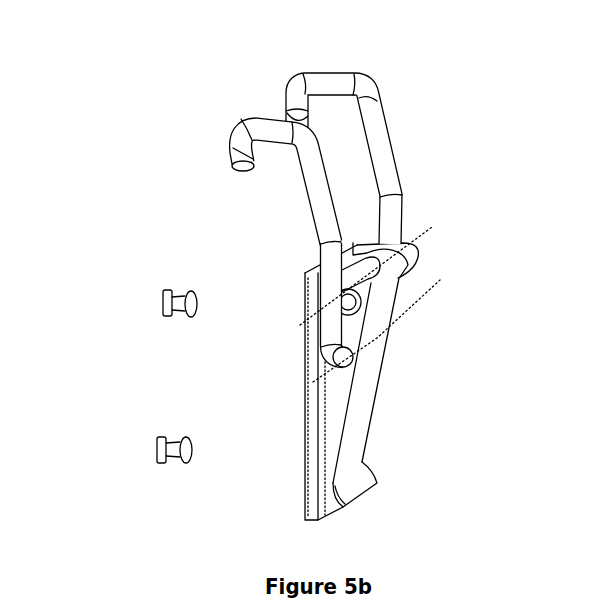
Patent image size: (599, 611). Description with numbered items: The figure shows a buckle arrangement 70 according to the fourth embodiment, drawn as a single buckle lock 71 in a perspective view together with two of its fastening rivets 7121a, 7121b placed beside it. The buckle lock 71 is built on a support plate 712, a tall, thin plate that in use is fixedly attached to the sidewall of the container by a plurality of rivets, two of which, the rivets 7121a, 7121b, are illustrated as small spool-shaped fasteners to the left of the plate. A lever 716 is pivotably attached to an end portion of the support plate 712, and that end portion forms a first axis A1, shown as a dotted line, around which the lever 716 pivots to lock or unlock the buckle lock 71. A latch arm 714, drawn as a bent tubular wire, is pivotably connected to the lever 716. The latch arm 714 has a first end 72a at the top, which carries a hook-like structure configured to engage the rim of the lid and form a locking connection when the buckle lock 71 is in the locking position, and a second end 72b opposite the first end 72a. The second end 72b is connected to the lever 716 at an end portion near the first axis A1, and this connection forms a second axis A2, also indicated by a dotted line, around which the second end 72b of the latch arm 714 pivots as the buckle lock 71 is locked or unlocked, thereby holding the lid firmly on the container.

The buckle arrangement 70 is at (310, 280).
The buckle lock 71 is at (356, 195).
The first end 72a is at (399, 133).
The second end 72b is at (376, 340).
The latch arm 714 is at (404, 168).
The lever 716 is at (367, 420).
The support plate 712 is at (330, 518).
The rivet 7121a is at (160, 300).
The rivet 7121b is at (155, 442).
The first axis A1 is at (430, 230).
The second axis A2 is at (435, 283).